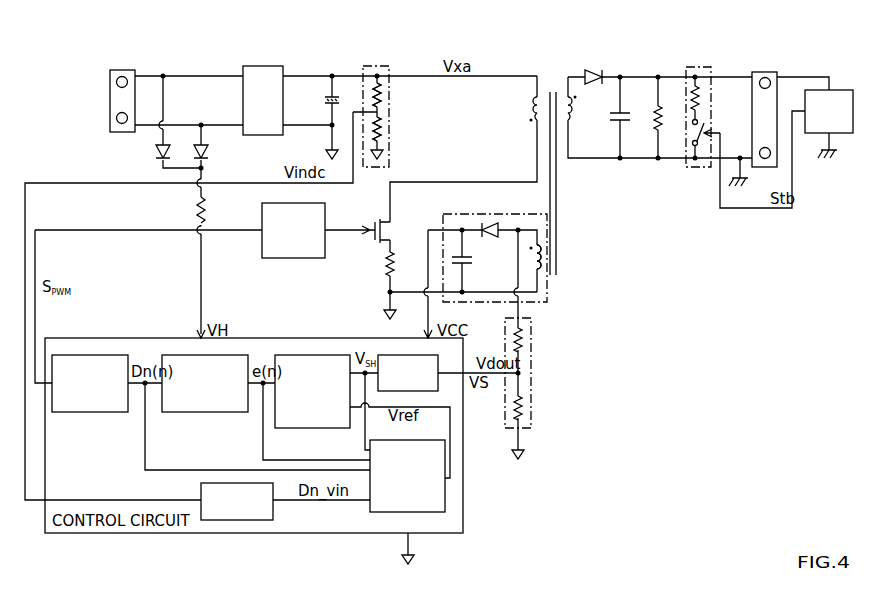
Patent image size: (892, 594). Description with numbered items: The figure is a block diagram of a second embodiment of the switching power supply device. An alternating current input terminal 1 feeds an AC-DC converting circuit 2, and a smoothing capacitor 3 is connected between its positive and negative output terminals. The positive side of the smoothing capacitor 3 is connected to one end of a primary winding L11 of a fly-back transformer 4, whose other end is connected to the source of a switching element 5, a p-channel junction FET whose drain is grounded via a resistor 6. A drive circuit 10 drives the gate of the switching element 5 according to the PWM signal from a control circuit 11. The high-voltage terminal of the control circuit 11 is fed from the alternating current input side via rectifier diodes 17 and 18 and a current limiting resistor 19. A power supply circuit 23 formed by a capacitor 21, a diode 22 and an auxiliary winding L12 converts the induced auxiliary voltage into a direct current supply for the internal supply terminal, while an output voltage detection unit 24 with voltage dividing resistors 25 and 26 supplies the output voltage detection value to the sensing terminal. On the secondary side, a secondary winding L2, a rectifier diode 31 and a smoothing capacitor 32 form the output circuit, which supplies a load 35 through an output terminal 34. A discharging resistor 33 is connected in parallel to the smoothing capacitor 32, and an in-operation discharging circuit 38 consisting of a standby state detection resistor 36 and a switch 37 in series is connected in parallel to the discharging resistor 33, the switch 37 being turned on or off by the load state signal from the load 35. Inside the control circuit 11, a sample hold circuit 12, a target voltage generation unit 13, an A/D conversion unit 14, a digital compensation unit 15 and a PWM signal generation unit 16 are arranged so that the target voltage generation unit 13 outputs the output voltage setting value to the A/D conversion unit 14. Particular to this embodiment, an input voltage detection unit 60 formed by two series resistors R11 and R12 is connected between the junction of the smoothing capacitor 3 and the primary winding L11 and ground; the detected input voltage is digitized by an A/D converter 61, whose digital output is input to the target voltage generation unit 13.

The alternating current input terminal 1 is at (122, 70).
The AC-DC converting circuit 2 is at (265, 66).
The smoothing capacitor 3 is at (332, 95).
The fly-back transformer 4 is at (556, 81).
The switching element 5 is at (376, 224).
The resistor 6 is at (385, 265).
The drive circuit 10 is at (262, 243).
The control circuit 11 is at (150, 338).
The sample hold circuit 12 is at (405, 355).
The target voltage generation unit 13 is at (445, 497).
The A/D conversion unit 14 is at (323, 355).
The digital compensation unit 15 is at (218, 412).
The PWM signal generation unit 16 is at (98, 412).
The rectifier diode 17 is at (156, 152).
The rectifier diode 18 is at (208, 152).
The current limiting resistor 19 is at (197, 210).
The capacitor 21 is at (470, 263).
The diode 22 is at (492, 215).
The power supply circuit 23 is at (549, 292).
The output voltage detection unit 24 is at (535, 373).
The voltage dividing resistor 25 is at (525, 334).
The voltage dividing resistor 26 is at (525, 404).
The rectifier diode 31 is at (593, 70).
The smoothing capacitor 32 is at (622, 112).
The discharging resistor 33 is at (656, 128).
The output terminal 34 is at (765, 72).
The load 35 is at (840, 90).
The standby state detection resistor 36 is at (692, 108).
The switch 37 is at (703, 146).
The in-operation discharging circuit 38 is at (700, 67).
The input voltage detection unit 60 is at (377, 66).
The A/D converter 61 is at (200, 491).
The resistor R11 is at (385, 92).
The resistor R12 is at (385, 128).
The primary winding L11 is at (530, 108).
The secondary winding L2 is at (577, 113).
The auxiliary winding L12 is at (545, 252).